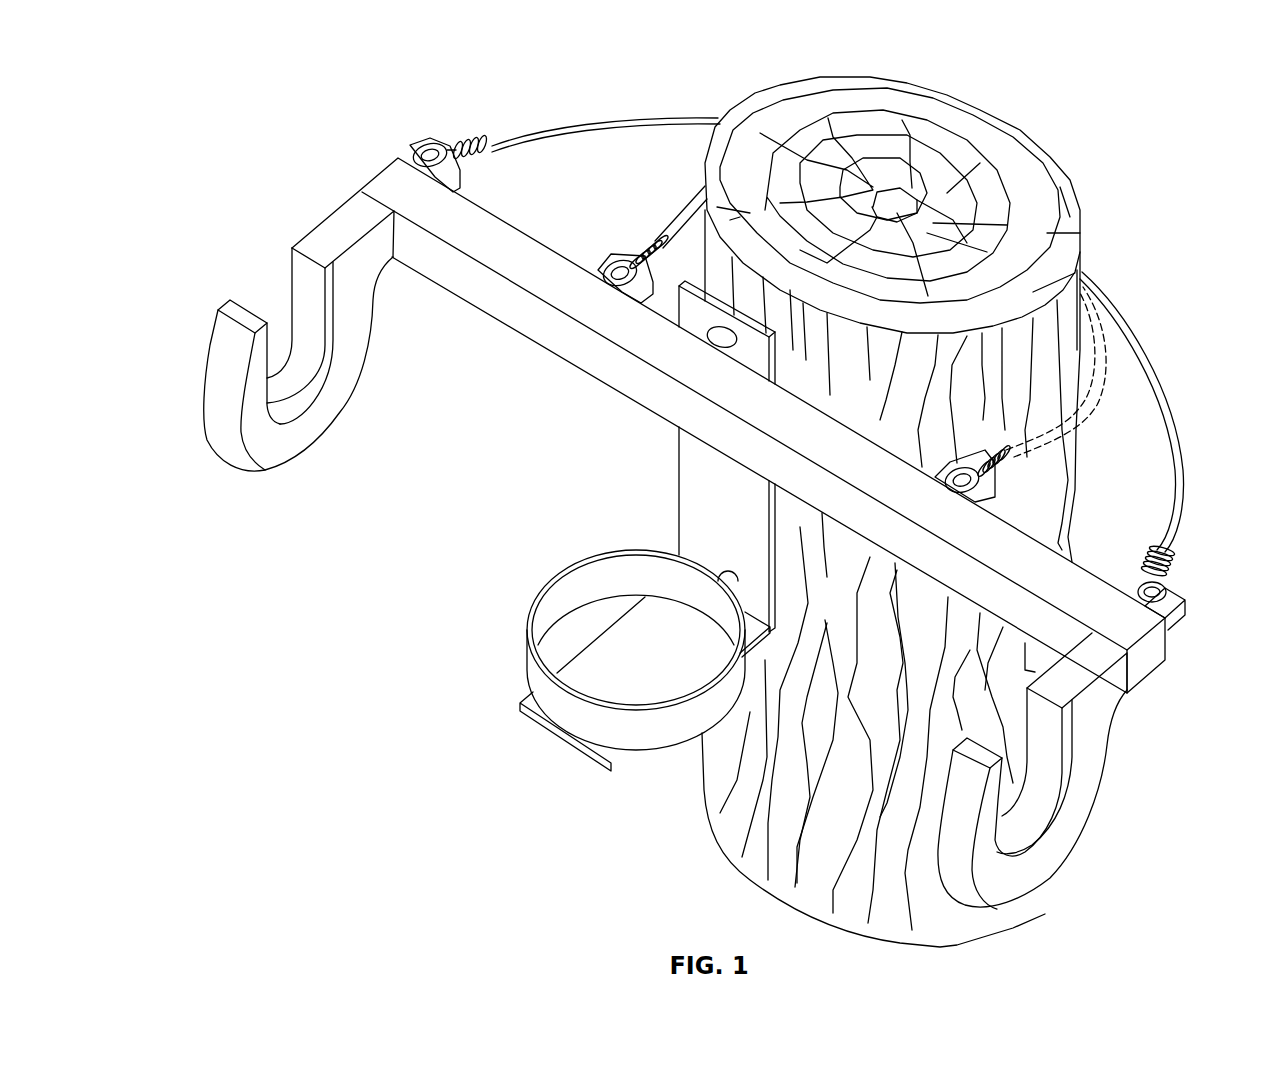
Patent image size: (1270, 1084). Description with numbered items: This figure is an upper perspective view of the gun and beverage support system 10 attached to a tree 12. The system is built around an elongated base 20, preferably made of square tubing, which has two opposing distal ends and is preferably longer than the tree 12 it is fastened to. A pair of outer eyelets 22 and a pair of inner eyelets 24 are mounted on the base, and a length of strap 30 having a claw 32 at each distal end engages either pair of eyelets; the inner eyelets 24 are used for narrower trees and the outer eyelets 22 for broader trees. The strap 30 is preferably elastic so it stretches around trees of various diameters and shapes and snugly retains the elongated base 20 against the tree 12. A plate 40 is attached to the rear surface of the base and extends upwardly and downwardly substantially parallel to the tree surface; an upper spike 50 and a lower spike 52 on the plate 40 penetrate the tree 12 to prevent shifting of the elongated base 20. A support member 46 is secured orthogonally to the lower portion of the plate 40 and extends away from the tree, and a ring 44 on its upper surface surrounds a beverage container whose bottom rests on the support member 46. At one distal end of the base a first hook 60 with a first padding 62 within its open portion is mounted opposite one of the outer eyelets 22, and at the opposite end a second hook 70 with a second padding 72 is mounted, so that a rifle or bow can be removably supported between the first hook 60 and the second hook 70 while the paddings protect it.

The gun and beverage support system 10 is at (722, 521).
The tree 12 is at (1000, 133).
The elongated base 20 is at (503, 300).
The outer eyelets 22 is at (410, 144).
The inner eyelets 24 is at (597, 262).
The strap 30 is at (540, 130).
The claw 32 is at (445, 138).
The plate 40 is at (688, 456).
The ring 44 is at (560, 571).
The support member 46 is at (553, 737).
The upper spike 50 is at (718, 348).
The lower spike 52 is at (727, 572).
The first hook 60 is at (1037, 792).
The first padding 62 is at (1040, 797).
The second hook 70 is at (299, 383).
The second padding 72 is at (309, 365).